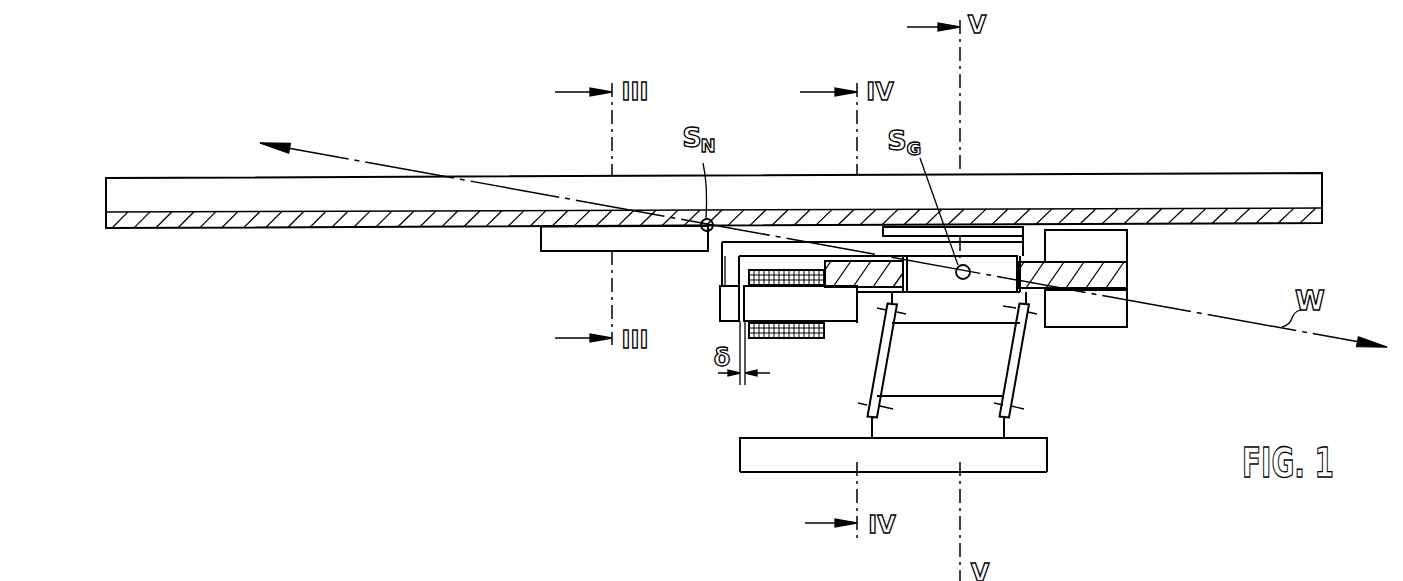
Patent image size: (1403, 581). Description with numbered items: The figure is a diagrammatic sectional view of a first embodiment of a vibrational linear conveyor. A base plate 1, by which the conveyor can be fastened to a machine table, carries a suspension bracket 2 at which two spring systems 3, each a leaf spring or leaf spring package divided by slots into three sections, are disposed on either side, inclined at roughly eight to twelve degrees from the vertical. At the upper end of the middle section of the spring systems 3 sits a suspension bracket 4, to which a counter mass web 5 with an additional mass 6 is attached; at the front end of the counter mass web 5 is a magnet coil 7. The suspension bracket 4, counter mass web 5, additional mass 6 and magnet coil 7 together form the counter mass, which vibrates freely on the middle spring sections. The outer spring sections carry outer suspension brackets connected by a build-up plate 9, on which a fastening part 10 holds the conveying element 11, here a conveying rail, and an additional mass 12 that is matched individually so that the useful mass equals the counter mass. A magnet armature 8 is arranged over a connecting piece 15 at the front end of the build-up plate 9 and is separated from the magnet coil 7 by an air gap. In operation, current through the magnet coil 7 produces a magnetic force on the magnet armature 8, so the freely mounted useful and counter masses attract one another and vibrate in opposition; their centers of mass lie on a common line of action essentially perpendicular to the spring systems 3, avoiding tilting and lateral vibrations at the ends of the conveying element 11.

The base plate 1 is at (767, 463).
The suspension bracket 2 is at (940, 430).
The spring systems 3 is at (880, 352).
The suspension bracket 4 is at (882, 341).
The counter mass web 5 is at (1100, 270).
The additional mass 6 is at (1107, 310).
The magnet coil 7 is at (782, 317).
The magnet armature 8 is at (723, 302).
The build-up plate 9 is at (722, 248).
The fastening part 10 is at (990, 228).
The conveying element 11 is at (1248, 190).
The additional mass 12 is at (558, 253).
The connecting piece 15 is at (722, 272).